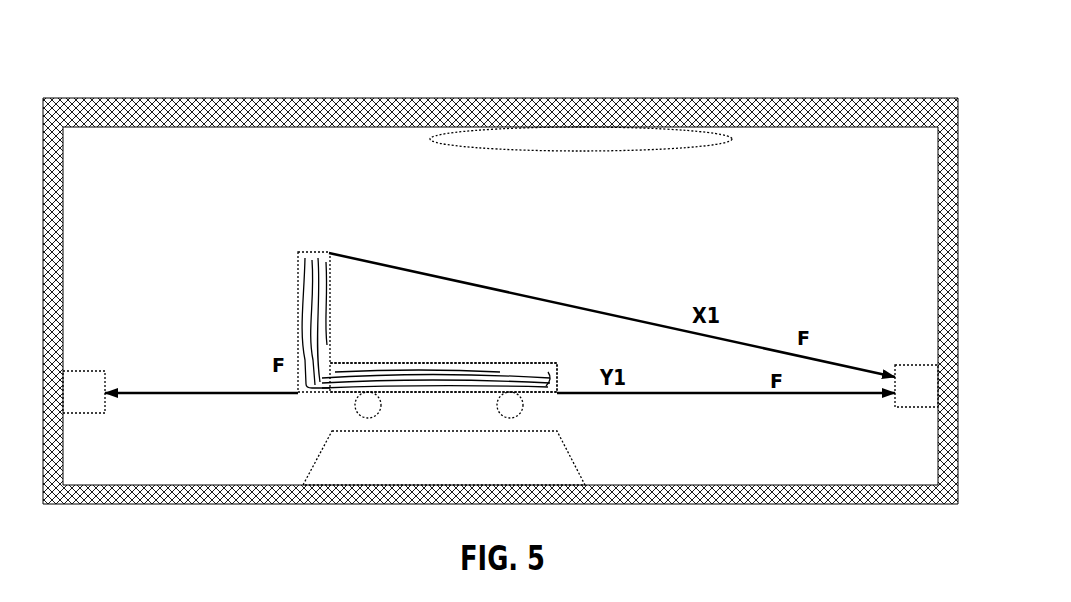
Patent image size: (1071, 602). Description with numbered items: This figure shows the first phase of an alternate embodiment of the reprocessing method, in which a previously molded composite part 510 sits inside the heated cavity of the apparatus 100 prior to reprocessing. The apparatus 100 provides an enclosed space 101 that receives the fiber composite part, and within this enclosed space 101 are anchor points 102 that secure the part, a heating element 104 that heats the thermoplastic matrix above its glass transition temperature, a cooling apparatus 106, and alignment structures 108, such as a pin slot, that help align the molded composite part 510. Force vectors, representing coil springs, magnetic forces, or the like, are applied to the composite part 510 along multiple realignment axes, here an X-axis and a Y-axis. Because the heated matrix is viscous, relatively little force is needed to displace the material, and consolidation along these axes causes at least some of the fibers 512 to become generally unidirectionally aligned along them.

The apparatus 100 is at (700, 73).
The enclosed space 101 is at (255, 195).
The anchor points 102 is at (85, 370).
The heating element 104 is at (700, 147).
The cooling apparatus 106 is at (570, 458).
The alignment structures 108 is at (357, 412).
The composite part 510 is at (298, 305).
The fibers 512 is at (507, 373).